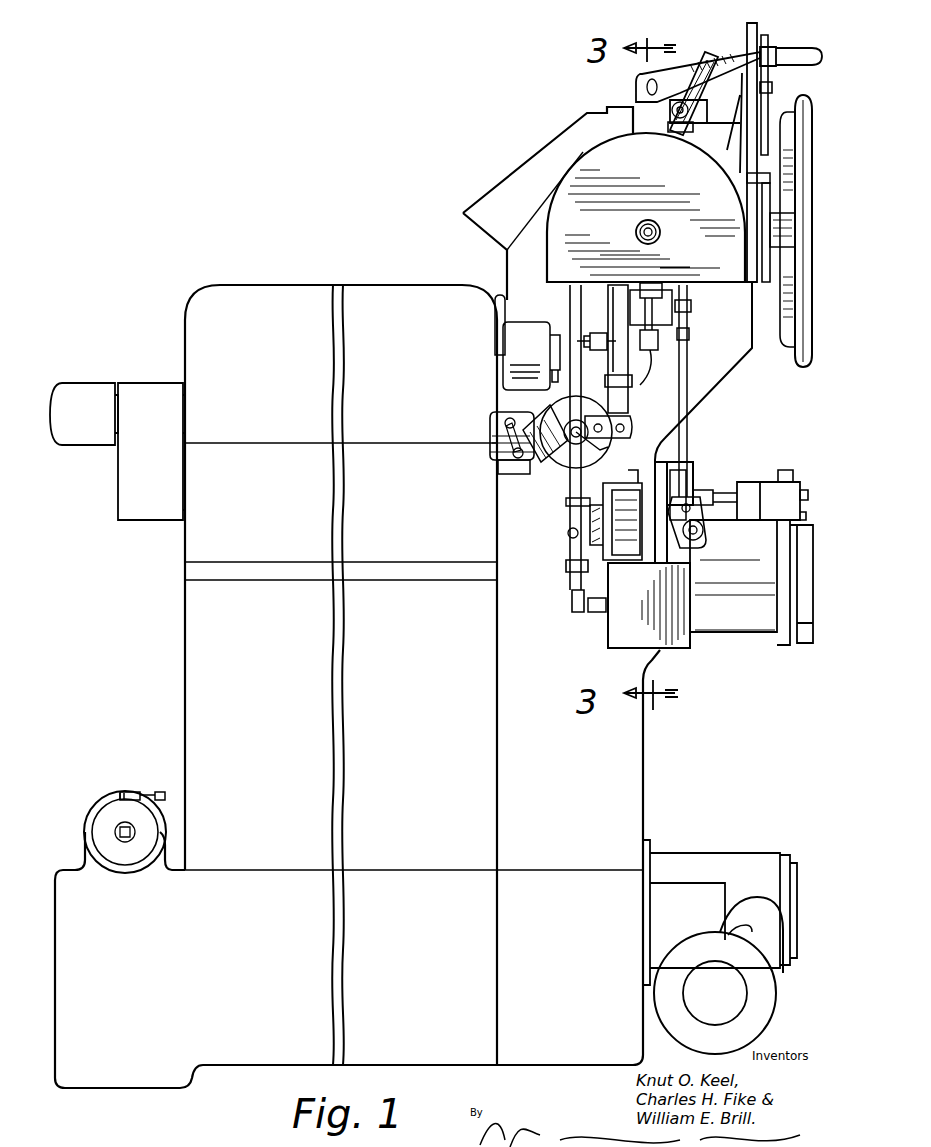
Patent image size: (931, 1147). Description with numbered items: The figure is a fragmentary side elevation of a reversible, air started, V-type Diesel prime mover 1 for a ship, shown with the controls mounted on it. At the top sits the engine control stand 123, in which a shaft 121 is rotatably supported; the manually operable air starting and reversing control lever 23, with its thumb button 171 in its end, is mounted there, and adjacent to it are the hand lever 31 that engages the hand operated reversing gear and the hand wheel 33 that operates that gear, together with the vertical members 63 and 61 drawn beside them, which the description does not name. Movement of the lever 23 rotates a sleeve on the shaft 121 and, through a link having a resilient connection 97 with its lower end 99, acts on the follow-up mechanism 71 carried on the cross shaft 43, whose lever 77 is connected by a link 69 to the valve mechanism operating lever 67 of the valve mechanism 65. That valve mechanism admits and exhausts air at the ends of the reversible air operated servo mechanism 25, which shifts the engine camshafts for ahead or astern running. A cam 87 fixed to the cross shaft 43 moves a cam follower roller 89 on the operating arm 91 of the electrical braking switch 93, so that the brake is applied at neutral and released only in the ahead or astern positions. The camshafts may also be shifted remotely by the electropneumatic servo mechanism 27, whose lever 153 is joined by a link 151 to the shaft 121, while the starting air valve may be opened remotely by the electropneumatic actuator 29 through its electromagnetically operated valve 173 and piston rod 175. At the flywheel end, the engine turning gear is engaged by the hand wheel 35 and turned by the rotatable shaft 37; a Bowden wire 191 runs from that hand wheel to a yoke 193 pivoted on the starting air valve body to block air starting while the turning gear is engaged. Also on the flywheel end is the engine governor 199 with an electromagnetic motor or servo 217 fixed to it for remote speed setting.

The prime mover 1 is at (336, 285).
The electromagnetic motor or servo 217 is at (68, 392).
The engine governor 199 is at (145, 398).
The hand wheel 35 is at (102, 797).
The rotatable shaft 37 is at (118, 829).
The Bowden wire 191 is at (683, 312).
The engine control stand 123 is at (583, 160).
The shaft 121 is at (660, 228).
The air starting and reversing control lever 23 is at (705, 90).
The thumb button 171 is at (712, 52).
The vertical bar 63 is at (757, 35).
The rod 61 is at (770, 50).
The hand lever 31 is at (805, 65).
The hand wheel 33 is at (808, 367).
The electropneumatic actuator 29 is at (752, 490).
The electromagnetically operated valve 173 is at (790, 487).
The piston rod 175 is at (698, 490).
The reversible air operated servo mechanism 25 is at (730, 613).
The remotely controlled electropneumatic servo mechanism 27 is at (682, 645).
The valve mechanism 65 is at (632, 547).
The link 151 is at (569, 300).
The lever 153 is at (598, 610).
The link 69 is at (568, 500).
The valve mechanism operating lever 67 is at (568, 533).
The lower end of the resilient connection 99 is at (630, 393).
The resilient connection 97 is at (606, 350).
The yoke 193 is at (650, 284).
The lever 77 is at (620, 437).
The follow-up mechanism 71 is at (605, 447).
The cross shaft 43 is at (565, 420).
The cam 87 is at (548, 462).
The operating arm 91 is at (500, 430).
The electrical braking switch 93 is at (488, 452).
The cam follower roller 89 is at (501, 483).